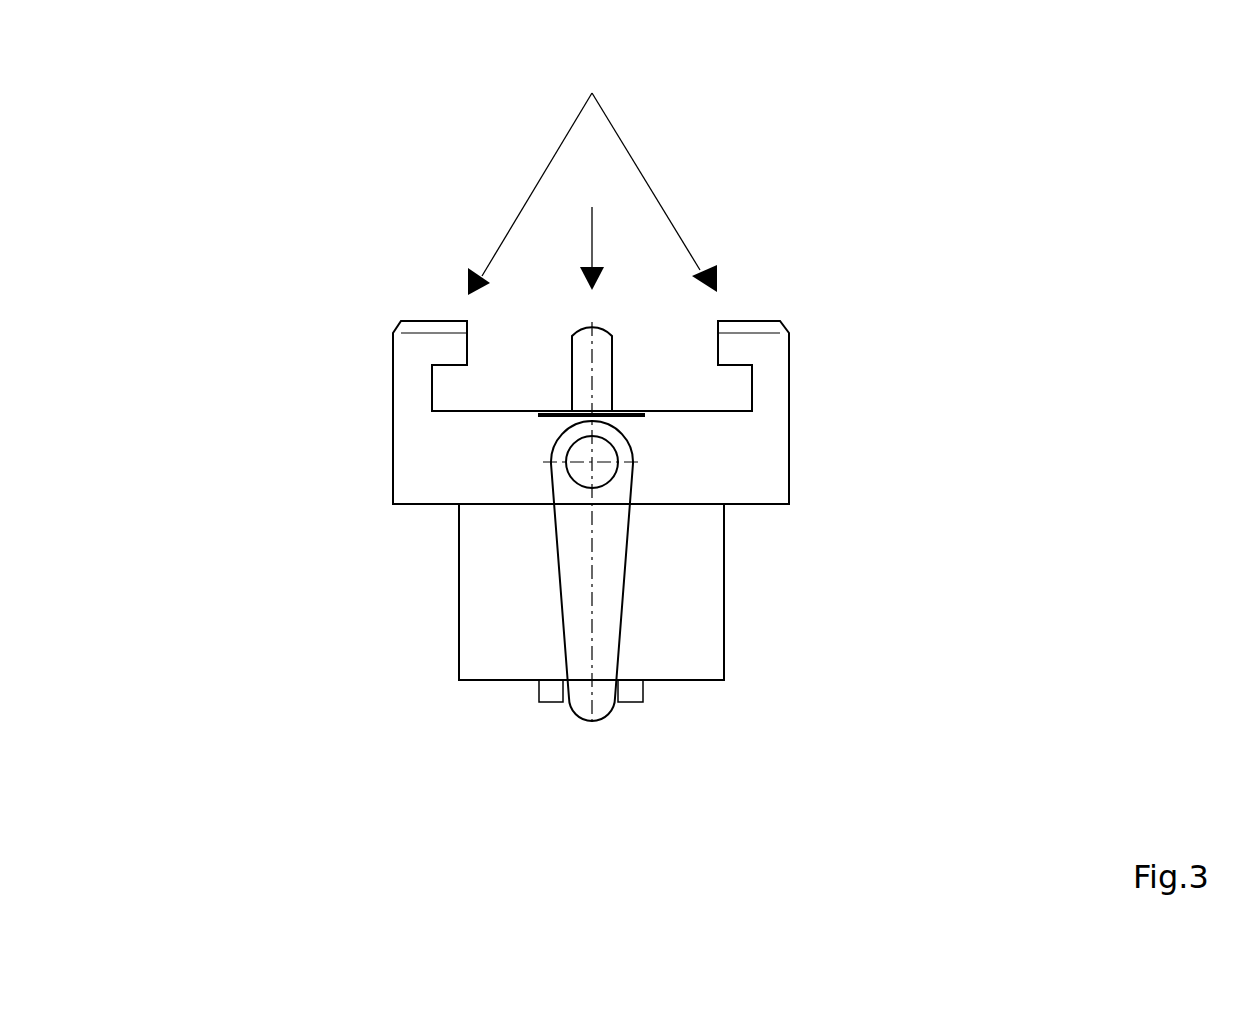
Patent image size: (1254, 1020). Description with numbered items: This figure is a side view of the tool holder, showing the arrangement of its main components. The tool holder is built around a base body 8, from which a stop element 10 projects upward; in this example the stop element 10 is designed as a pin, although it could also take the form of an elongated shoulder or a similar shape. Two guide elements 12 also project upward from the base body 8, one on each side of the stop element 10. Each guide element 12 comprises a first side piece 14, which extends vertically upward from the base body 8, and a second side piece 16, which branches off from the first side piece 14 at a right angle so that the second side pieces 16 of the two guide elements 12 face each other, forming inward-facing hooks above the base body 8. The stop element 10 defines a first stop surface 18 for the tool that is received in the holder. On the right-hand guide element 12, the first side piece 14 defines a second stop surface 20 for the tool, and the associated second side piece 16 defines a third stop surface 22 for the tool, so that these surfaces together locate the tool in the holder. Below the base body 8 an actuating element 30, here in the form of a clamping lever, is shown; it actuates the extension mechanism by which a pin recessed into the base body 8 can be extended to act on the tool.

The base body 8 is at (490, 474).
The stop element 10 is at (595, 225).
The guide elements 12 is at (592, 165).
The first side piece 14 is at (413, 387).
The second side piece 16 is at (447, 350).
The first stop surface 18 is at (603, 357).
The second stop surface 20 is at (753, 389).
The third stop surface 22 is at (736, 367).
The actuating element 30 is at (578, 560).